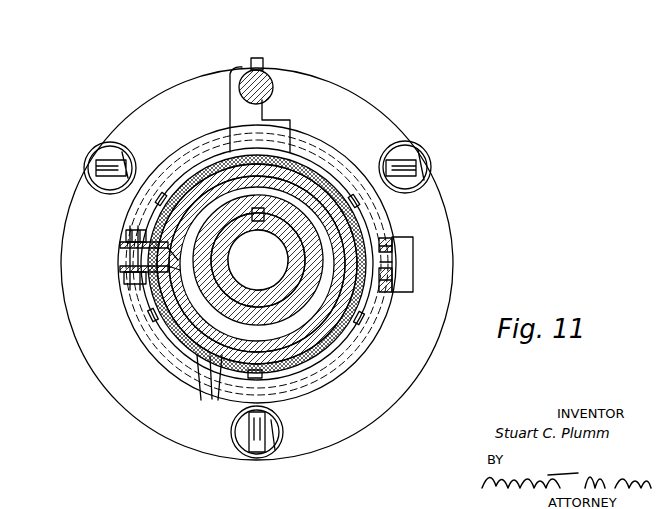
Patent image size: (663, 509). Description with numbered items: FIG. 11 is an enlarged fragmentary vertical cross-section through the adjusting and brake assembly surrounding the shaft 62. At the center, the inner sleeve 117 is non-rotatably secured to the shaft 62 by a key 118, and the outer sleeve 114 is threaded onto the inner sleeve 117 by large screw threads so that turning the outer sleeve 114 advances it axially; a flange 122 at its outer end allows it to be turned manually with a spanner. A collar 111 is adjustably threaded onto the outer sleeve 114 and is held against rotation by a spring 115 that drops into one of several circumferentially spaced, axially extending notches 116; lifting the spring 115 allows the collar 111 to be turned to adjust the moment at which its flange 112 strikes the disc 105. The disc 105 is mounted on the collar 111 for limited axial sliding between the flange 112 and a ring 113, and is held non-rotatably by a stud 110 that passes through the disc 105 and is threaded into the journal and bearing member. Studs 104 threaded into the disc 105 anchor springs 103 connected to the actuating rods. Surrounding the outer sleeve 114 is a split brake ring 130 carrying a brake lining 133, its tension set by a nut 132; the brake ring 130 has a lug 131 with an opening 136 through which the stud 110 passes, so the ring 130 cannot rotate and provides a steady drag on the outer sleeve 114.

The shaft 62 is at (223, 257).
The spring 103 is at (282, 437).
The stud 104 is at (243, 437).
The disc 105 is at (366, 110).
The stud 110 is at (266, 92).
The collar 111 is at (157, 156).
The flange 112 is at (186, 170).
The ring 113 is at (414, 247).
The outer sleeve 114 is at (330, 346).
The spring 115 is at (262, 381).
The notches 116 is at (155, 318).
The inner sleeve 117 is at (221, 297).
The key 118 is at (258, 221).
The flange 122 is at (414, 282).
The brake ring 130 is at (197, 364).
The lug 131 is at (232, 84).
The nut 132 is at (125, 282).
The brake lining 133 is at (217, 390).
The opening 136 is at (262, 58).